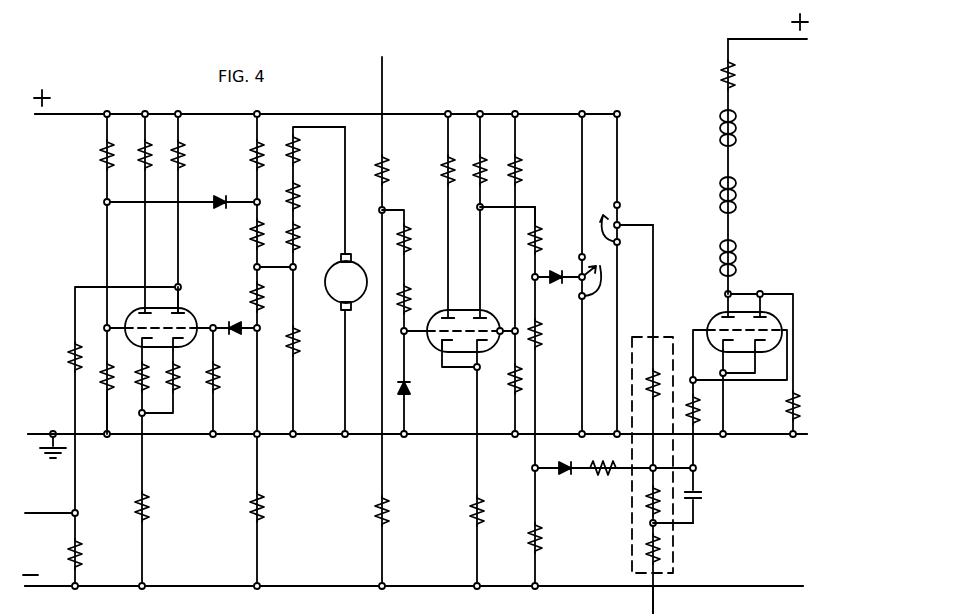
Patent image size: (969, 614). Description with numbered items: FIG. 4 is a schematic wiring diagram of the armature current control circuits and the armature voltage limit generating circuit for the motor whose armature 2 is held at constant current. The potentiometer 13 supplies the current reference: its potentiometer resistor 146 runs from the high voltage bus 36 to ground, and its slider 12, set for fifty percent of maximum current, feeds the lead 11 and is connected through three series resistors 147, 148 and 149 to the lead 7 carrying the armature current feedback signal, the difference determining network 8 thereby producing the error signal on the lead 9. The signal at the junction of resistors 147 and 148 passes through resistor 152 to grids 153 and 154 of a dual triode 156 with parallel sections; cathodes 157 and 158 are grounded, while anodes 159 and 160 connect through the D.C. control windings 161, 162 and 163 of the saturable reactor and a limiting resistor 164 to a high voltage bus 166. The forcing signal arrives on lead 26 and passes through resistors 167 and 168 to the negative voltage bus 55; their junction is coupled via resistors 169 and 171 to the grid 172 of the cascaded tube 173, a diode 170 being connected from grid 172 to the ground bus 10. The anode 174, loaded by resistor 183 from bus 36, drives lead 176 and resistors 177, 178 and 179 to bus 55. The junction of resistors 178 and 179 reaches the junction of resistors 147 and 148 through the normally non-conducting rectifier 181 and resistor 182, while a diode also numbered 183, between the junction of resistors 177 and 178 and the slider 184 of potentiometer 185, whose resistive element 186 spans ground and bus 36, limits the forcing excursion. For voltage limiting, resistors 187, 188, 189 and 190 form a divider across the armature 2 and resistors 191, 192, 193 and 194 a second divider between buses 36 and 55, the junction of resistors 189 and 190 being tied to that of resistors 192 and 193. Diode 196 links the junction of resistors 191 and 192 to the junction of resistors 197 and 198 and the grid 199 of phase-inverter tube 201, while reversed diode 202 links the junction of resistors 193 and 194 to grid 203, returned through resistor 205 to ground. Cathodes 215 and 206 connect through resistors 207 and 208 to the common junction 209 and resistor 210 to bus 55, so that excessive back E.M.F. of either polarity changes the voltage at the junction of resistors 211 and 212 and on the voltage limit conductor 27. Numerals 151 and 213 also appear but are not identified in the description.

The armature 2 is at (333, 270).
The lead 7 is at (654, 603).
The difference determining network 8 is at (632, 565).
The output lead 9 is at (686, 524).
The ground bus 10 is at (316, 434).
The lead 11 is at (653, 291).
The slider 12 is at (607, 221).
The potentiometer 13 is at (640, 246).
The lead 26 is at (382, 78).
The voltage limit conductor 27 is at (43, 513).
The high voltage bus 36 is at (333, 113).
The negative voltage bus 55 is at (312, 586).
The potentiometer resistor 146 is at (615, 205).
The resistor 147 is at (647, 368).
The resistor 148 is at (645, 497).
The resistor 149 is at (648, 545).
The capacitor 151 is at (703, 495).
The resistor 152 is at (703, 422).
The grid 153 is at (712, 320).
The grid 154 is at (768, 338).
The dual triode 156 is at (700, 330).
The cathode 157 is at (722, 343).
The cathode 158 is at (758, 345).
The anode 159 is at (710, 293).
The anode 160 is at (776, 302).
The D.C. control winding 161 is at (720, 262).
The D.C. control winding 162 is at (718, 196).
The D.C. control winding 163 is at (720, 129).
The limiting resistor 164 is at (722, 71).
The high voltage bus 166 is at (744, 39).
The resistor 167 is at (380, 166).
The resistor 168 is at (387, 510).
The resistor 169 is at (407, 238).
The diode 170 is at (406, 398).
The resistor 171 is at (412, 312).
The grid 172 is at (432, 346).
The tube 173 is at (462, 312).
The anode 174 is at (475, 313).
The lead 176 is at (526, 217).
The resistor 177 is at (539, 237).
The resistor 178 is at (539, 332).
The resistor 179 is at (543, 537).
The rectifier 181 is at (564, 473).
The resistor 182 is at (602, 472).
The resistor 183 is at (478, 162).
The slider 184 is at (578, 266).
The potentiometer 185 is at (610, 312).
The resistive element 186 is at (598, 258).
The resistor 187 is at (297, 151).
The resistor 188 is at (297, 196).
The resistor 189 is at (297, 239).
The resistor 190 is at (297, 341).
The resistor 191 is at (252, 160).
The resistor 192 is at (250, 232).
The resistor 193 is at (252, 296).
The resistor 194 is at (266, 510).
The diode 196 is at (219, 198).
The resistor 197 is at (100, 156).
The resistor 198 is at (104, 392).
The grid 199 is at (128, 320).
The tube 201 is at (181, 308).
The diode 202 is at (240, 334).
The grid 203 is at (192, 328).
The resistor 205 is at (218, 385).
The cathode 206 is at (178, 340).
The resistor 207 is at (140, 388).
The resistor 208 is at (176, 385).
The common junction 209 is at (146, 416).
The resistor 210 is at (151, 510).
The resistor 211 is at (80, 554).
The resistor 212 is at (75, 353).
The plate 213 is at (184, 316).
The cathode 215 is at (120, 343).